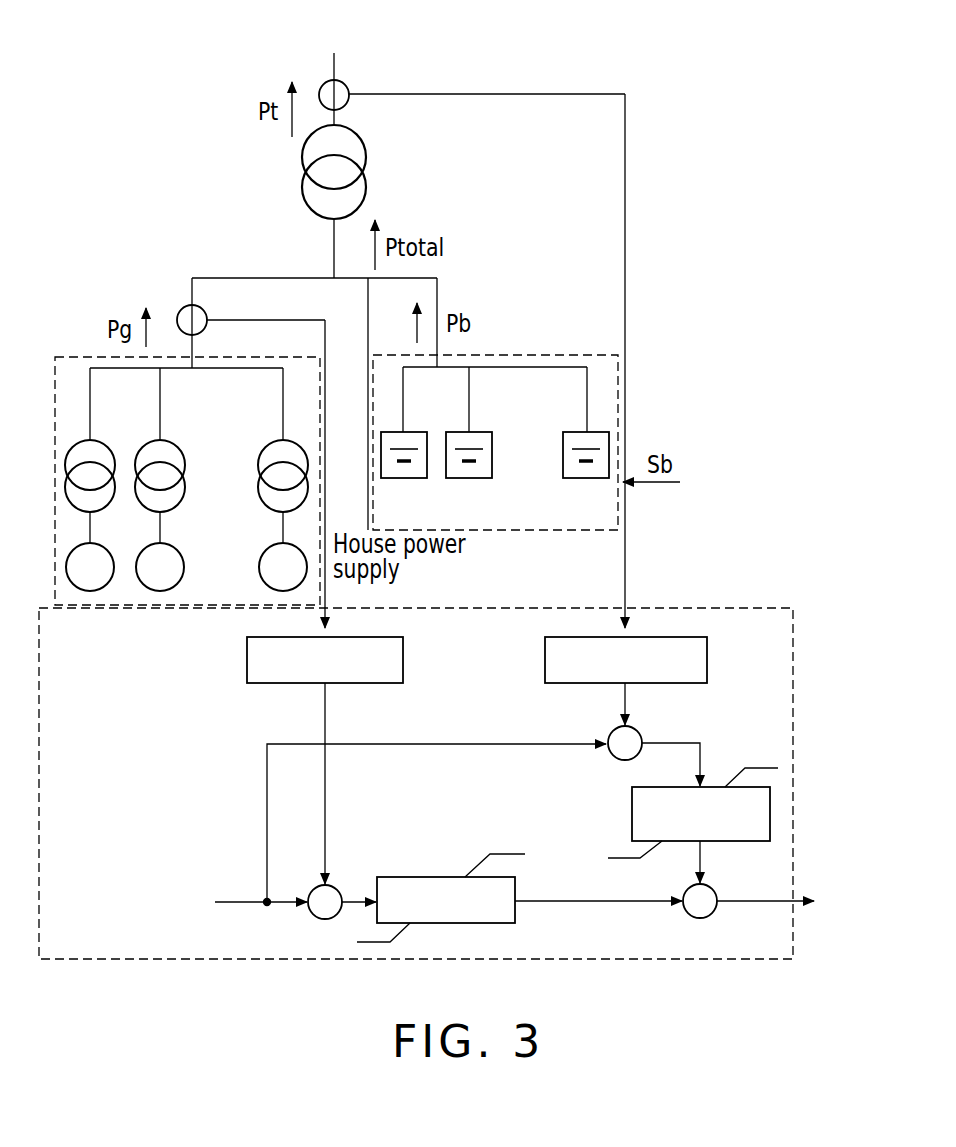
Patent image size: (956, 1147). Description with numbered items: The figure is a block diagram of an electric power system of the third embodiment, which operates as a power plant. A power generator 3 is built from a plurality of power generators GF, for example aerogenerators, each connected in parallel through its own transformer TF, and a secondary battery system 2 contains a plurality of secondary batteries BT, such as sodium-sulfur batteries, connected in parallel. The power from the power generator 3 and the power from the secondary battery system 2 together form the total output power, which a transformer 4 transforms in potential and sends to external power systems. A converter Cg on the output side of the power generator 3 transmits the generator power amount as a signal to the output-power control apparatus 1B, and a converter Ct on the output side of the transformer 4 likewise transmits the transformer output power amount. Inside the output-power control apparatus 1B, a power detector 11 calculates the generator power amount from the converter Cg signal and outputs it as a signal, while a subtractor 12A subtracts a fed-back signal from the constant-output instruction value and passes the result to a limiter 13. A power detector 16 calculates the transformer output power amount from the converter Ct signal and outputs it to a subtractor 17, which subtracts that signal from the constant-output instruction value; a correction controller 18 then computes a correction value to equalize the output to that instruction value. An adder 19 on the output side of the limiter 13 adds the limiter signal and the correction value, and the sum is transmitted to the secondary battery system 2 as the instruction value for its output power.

The output-power control apparatus 1B is at (795, 650).
The secondary battery system 2 is at (495, 408).
The power generator 3 is at (187, 448).
The transformer 4 is at (366, 153).
The power detector 11 is at (247, 660).
The subtractor 12A is at (316, 886).
The limiter 13 is at (415, 877).
The power detector 16 is at (707, 660).
The subtractor 17 is at (642, 735).
The correction controller 18 is at (632, 812).
The adder 19 is at (712, 913).
The converter Ct is at (346, 80).
The converter Cg is at (183, 305).
The transformer TF is at (110, 455).
The power generator GF is at (115, 573).
The secondary battery BT is at (404, 478).